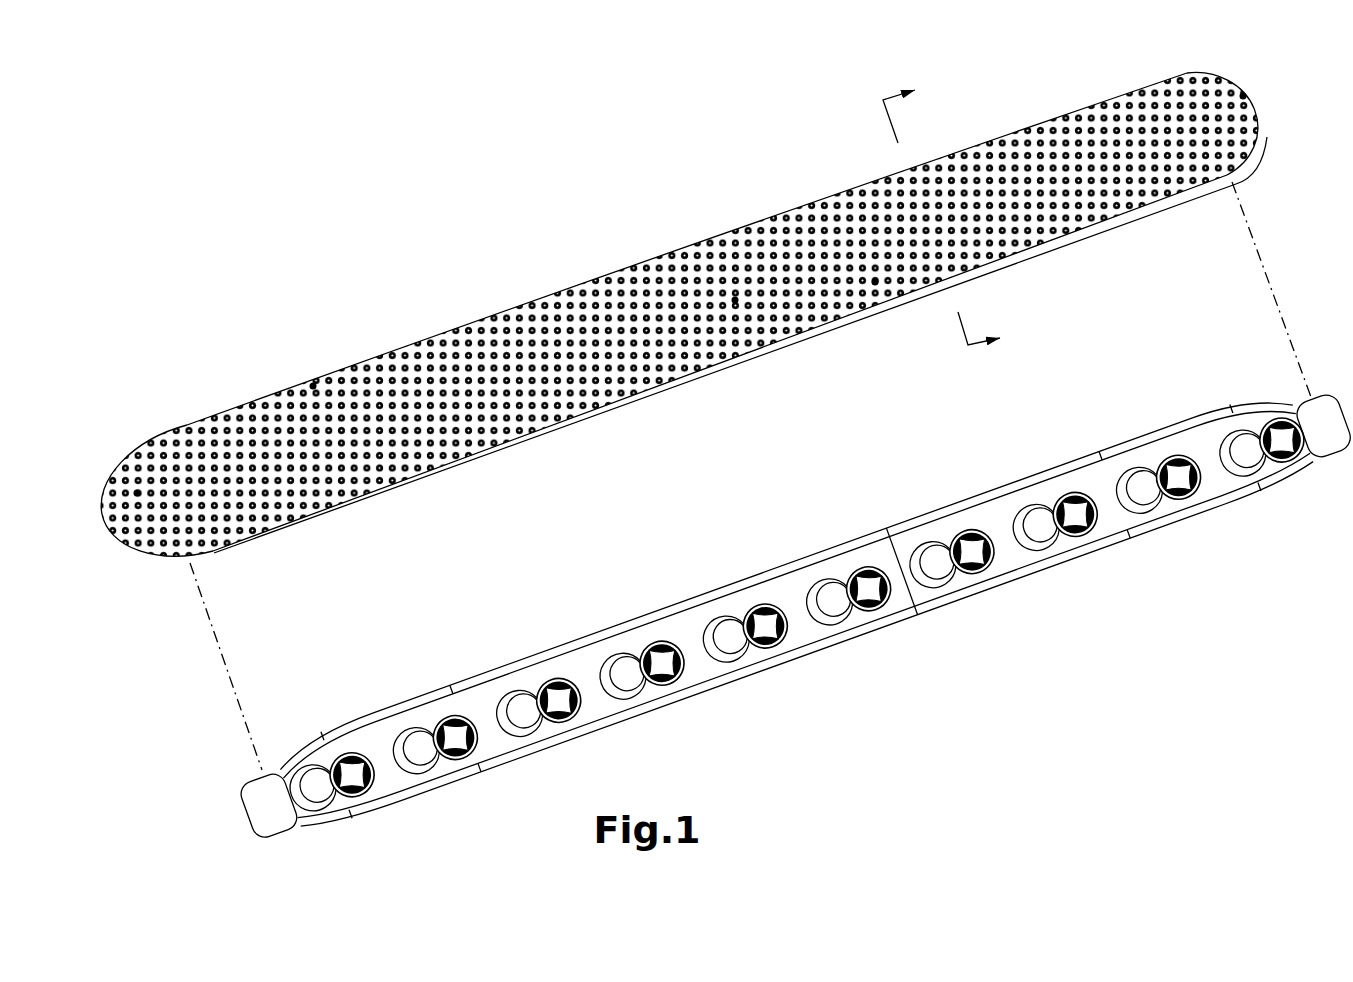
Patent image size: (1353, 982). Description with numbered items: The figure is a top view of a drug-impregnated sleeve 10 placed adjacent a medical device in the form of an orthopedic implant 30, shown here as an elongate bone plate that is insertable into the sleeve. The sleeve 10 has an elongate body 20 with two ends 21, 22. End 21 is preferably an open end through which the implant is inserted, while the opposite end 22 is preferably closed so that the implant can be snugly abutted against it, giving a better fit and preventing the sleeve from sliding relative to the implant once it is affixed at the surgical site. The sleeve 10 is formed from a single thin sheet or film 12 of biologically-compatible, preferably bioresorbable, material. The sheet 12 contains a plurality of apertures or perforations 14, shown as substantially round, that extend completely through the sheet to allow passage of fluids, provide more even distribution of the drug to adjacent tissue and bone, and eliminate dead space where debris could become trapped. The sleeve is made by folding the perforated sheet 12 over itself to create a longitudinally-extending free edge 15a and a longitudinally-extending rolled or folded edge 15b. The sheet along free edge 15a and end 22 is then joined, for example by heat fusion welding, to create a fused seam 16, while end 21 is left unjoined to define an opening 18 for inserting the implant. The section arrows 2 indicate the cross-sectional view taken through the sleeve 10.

The section line 2- 2 is at (957, 208).
The drug-impregnated sleeve 10 is at (723, 359).
The sheet 12 is at (872, 278).
The perforations 14 is at (735, 300).
The free edge 15a is at (437, 331).
The rolled edge 15b is at (478, 468).
The fused seam 16 is at (138, 489).
The opening 18 is at (1248, 94).
The elongate body 20 is at (630, 250).
The end 21 is at (1276, 132).
The end 22 is at (123, 556).
The orthopedic implant 30 is at (715, 705).